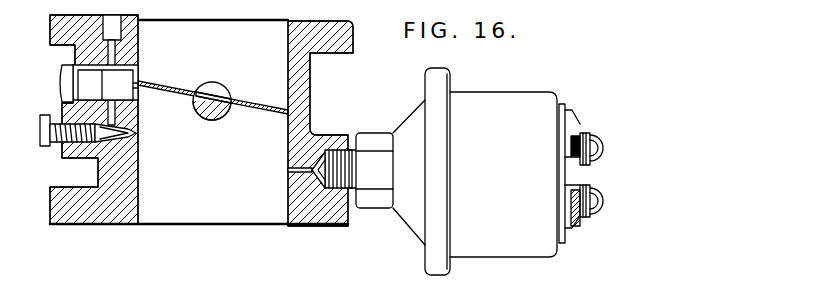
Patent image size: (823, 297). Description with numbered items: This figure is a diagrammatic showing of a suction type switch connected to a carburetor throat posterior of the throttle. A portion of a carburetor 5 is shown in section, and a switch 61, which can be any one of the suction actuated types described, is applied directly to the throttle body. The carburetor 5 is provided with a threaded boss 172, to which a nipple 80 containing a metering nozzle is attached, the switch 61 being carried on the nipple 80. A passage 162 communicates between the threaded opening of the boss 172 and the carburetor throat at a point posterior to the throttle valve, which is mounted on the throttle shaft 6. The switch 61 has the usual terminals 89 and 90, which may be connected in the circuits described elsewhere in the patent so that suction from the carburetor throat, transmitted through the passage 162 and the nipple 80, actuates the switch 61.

The carburetor 5 is at (312, 80).
The throttle shaft 6 is at (203, 117).
The switch 61 is at (534, 70).
The nipple 80 is at (382, 202).
The terminal 89 is at (604, 151).
The terminal 90 is at (604, 207).
The passage 162 is at (288, 170).
The threaded boss 172 is at (326, 133).